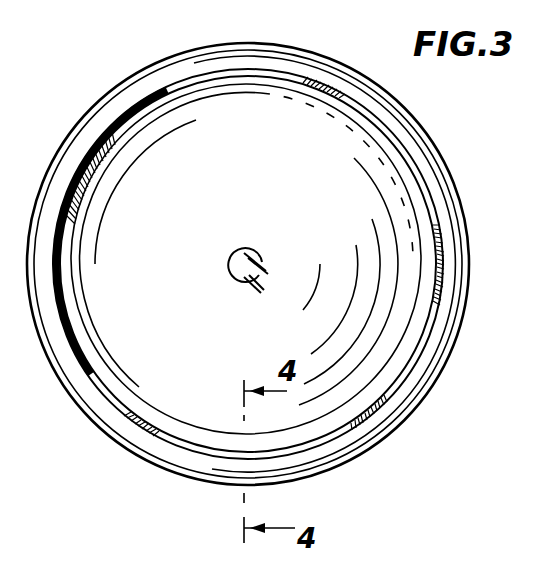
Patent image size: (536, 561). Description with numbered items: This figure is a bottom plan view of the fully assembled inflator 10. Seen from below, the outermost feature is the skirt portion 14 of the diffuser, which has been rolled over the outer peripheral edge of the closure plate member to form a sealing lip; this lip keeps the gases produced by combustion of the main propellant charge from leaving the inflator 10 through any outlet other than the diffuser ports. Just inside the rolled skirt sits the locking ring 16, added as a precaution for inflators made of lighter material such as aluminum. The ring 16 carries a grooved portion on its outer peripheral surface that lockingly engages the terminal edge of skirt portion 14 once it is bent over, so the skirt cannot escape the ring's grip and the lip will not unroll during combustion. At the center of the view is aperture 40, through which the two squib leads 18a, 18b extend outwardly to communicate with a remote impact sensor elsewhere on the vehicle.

The inflator 10 is at (58, 113).
The skirt portion 14 is at (427, 362).
The locking ring 16 is at (431, 248).
The aperture 40 is at (228, 259).
The lead 18a is at (254, 297).
The lead 18b is at (270, 268).